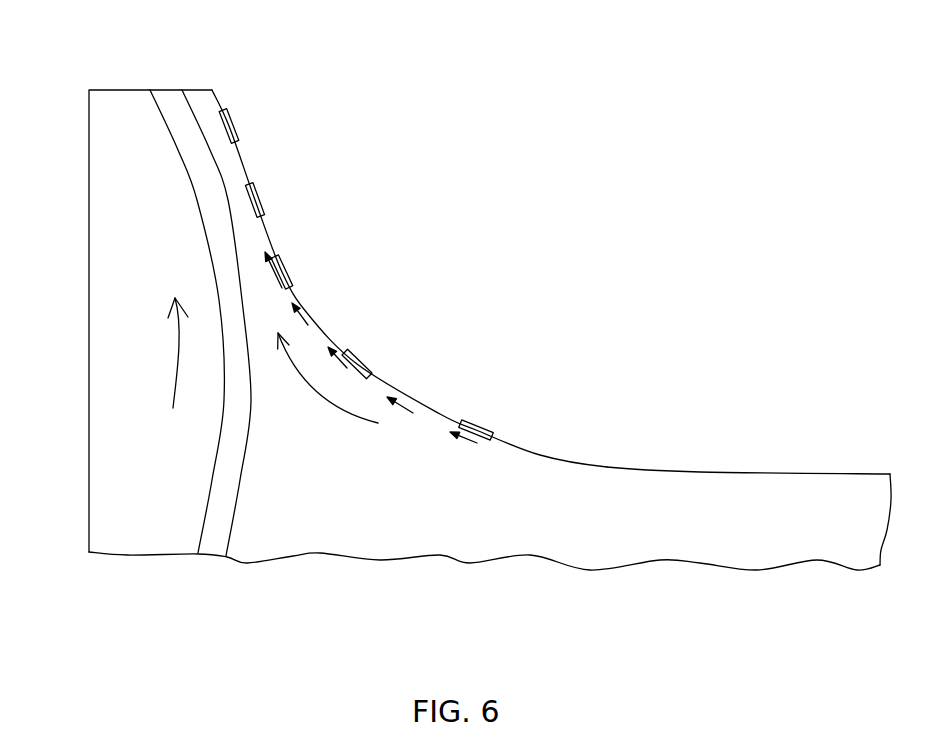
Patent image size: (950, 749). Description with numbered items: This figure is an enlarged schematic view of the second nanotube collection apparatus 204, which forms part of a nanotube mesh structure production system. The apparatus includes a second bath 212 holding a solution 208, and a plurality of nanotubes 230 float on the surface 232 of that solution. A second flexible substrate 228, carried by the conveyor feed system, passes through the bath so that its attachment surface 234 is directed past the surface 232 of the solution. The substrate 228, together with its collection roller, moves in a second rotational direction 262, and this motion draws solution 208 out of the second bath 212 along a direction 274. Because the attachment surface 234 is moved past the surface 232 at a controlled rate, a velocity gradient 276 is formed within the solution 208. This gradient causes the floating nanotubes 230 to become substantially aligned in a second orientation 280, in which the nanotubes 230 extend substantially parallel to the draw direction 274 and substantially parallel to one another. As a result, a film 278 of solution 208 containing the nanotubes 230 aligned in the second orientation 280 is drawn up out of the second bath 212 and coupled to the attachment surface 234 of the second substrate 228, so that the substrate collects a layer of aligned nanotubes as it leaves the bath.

The second nanotube collection apparatus 204 is at (118, 60).
The solution 208 is at (650, 528).
The second bath 212 is at (592, 170).
The second flexible substrate 228 is at (215, 547).
The nanotubes 230 is at (262, 207).
The surface 232 is at (778, 472).
The attachment surface 234 is at (235, 525).
The second rotational direction 262 is at (180, 348).
The direction 274 is at (322, 392).
The velocity gradient 276 is at (310, 318).
The film 278 is at (198, 98).
The second orientation 280 is at (464, 324).